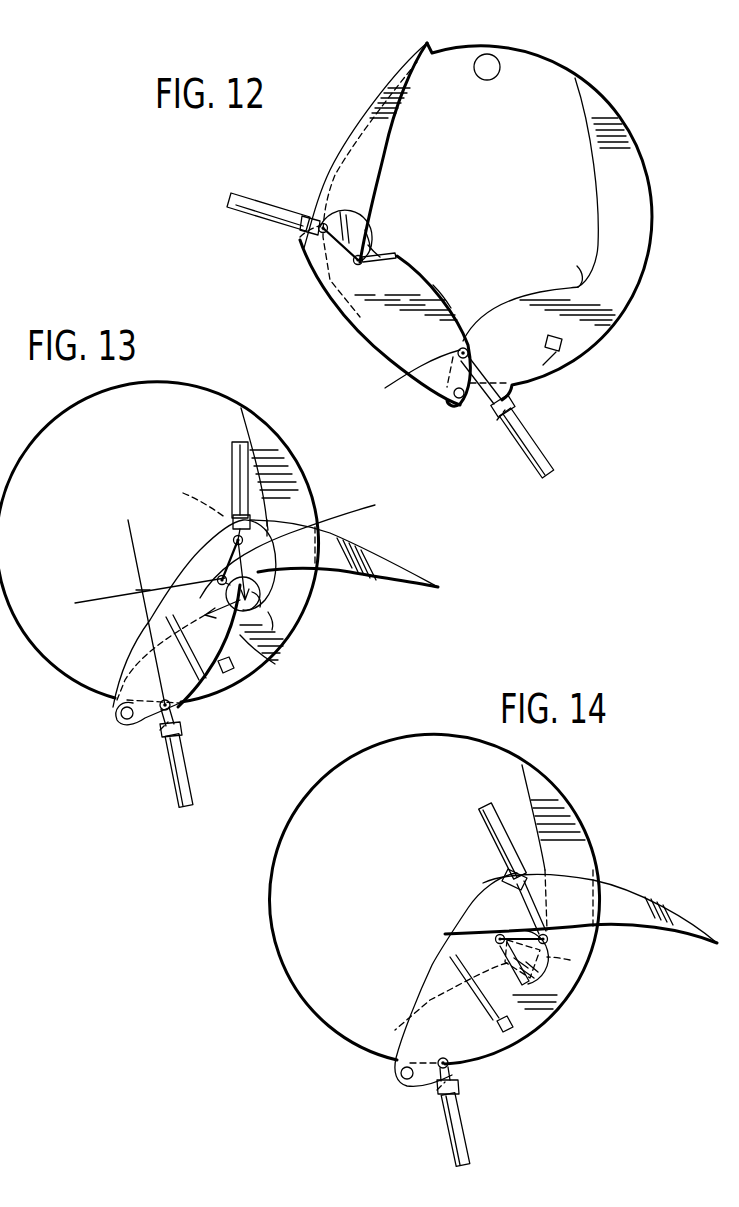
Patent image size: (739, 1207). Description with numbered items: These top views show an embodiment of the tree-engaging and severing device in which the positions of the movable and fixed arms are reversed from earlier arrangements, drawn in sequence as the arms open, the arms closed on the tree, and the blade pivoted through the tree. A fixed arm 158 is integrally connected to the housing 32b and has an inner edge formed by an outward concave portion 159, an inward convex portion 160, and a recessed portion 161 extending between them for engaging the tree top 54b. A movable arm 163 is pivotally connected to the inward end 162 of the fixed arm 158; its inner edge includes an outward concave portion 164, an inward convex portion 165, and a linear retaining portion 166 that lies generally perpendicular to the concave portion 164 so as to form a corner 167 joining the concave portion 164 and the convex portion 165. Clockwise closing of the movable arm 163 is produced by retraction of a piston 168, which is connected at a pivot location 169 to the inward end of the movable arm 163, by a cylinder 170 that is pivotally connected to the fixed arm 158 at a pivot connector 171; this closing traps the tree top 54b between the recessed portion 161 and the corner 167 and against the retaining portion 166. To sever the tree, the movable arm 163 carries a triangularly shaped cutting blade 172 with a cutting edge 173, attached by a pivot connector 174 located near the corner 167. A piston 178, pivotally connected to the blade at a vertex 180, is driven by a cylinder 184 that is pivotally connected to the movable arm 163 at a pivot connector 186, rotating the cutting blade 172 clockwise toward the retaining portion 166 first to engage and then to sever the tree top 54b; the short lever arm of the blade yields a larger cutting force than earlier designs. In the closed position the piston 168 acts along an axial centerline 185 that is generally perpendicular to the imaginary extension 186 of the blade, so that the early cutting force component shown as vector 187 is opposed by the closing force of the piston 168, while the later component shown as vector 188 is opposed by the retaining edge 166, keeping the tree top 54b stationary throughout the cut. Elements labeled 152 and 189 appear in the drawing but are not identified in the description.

In FIG. 12, the housing 32b is at (650, 262).
In FIG. 13, the housing 32b is at (304, 472).
In FIG. 14, the housing 32b is at (597, 862).
In FIG. 12, the tree top 54b is at (497, 60).
In FIG. 13, the tree top 54b is at (262, 597).
In FIG. 14, the tree top 54b is at (570, 960).
In FIG. 13, the blade 152 is at (299, 490).
In FIG. 14, the blade 152 is at (575, 835).
In FIG. 12, the fixed arm 158 is at (618, 118).
In FIG. 12, the outward concave portion 159 is at (585, 122).
In FIG. 12, the inward convex portion 160 is at (518, 297).
In FIG. 13, the inward convex portion 160 is at (120, 717).
In FIG. 14, the inward convex portion 160 is at (400, 1077).
In FIG. 12, the recessed portion 161 is at (578, 285).
In FIG. 13, the recessed portion 161 is at (260, 607).
In FIG. 12, the inward end 162 is at (543, 365).
In FIG. 12, the movable arm 163 is at (395, 345).
In FIG. 13, the movable arm 163 is at (425, 567).
In FIG. 14, the movable arm 163 is at (665, 912).
In FIG. 12, the outward concave portion 164 is at (390, 133).
In FIG. 12, the inward convex portion 165 is at (433, 285).
In FIG. 12, the linear retaining portion 166 is at (380, 256).
In FIG. 13, the linear retaining portion 166 is at (235, 613).
In FIG. 14, the linear retaining portion 166 is at (494, 957).
In FIG. 12, the corner 167 is at (370, 247).
In FIG. 13, the corner 167 is at (268, 612).
In FIG. 12, the piston 168 is at (480, 405).
In FIG. 13, the piston 168 is at (178, 716).
In FIG. 14, the piston 168 is at (457, 1083).
In FIG. 12, the pivot location 169 is at (458, 356).
In FIG. 13, the pivot location 169 is at (122, 690).
In FIG. 14, the pivot location 169 is at (460, 1063).
In FIG. 12, the cylinder 170 is at (545, 455).
In FIG. 13, the cylinder 170 is at (168, 757).
In FIG. 14, the cylinder 170 is at (450, 1123).
In FIG. 12, the pivot connector 171 is at (497, 420).
In FIG. 13, the pivot connector 171 is at (160, 730).
In FIG. 14, the pivot connector 171 is at (437, 1090).
In FIG. 12, the cutting blade 172 is at (358, 215).
In FIG. 13, the cutting blade 172 is at (280, 517).
In FIG. 14, the cutting blade 172 is at (545, 957).
In FIG. 12, the cutting edge 173 is at (365, 235).
In FIG. 12, the pivot connector 174 is at (355, 262).
In FIG. 13, the pivot connector 174 is at (220, 577).
In FIG. 14, the pivot connector 174 is at (494, 941).
In FIG. 12, the piston 178 is at (319, 222).
In FIG. 13, the piston 178 is at (232, 522).
In FIG. 14, the piston 178 is at (520, 897).
In FIG. 12, the vertex 180 is at (320, 233).
In FIG. 13, the vertex 180 is at (234, 538).
In FIG. 14, the vertex 180 is at (553, 942).
In FIG. 12, the cylinder 184 is at (234, 212).
In FIG. 13, the cylinder 184 is at (232, 468).
In FIG. 14, the cylinder 184 is at (482, 818).
In FIG. 13, the axial centerline 185 is at (130, 543).
In FIG. 12, the pivot connector 186 is at (300, 237).
In FIG. 13, the pivot connector 186 is at (100, 597).
In FIG. 14, the pivot connector 186 is at (505, 881).
In FIG. 13, the vector 187 is at (315, 528).
In FIG. 13, the vector 188 is at (240, 635).
In FIG. 12, the stop block 189 is at (565, 348).
In FIG. 13, the stop block 189 is at (233, 670).
In FIG. 14, the stop block 189 is at (508, 1027).